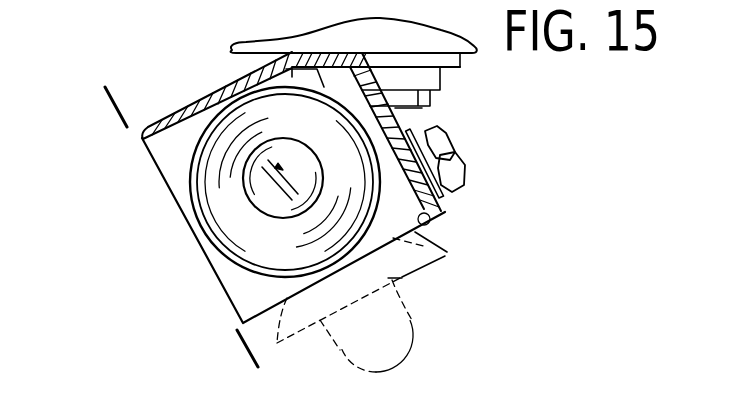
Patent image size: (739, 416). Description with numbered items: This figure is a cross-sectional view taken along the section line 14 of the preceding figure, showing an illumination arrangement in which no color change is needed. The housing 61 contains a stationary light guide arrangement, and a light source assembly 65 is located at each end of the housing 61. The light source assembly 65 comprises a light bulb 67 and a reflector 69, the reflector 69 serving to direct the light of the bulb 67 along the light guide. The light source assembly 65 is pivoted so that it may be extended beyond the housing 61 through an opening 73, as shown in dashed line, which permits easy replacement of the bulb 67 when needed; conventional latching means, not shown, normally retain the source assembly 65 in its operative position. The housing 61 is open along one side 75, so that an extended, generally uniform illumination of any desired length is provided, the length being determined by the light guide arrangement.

The section line 14 is at (110, 103).
The housing 61 is at (192, 113).
The light source assembly 65 is at (385, 197).
The light bulb 67 is at (292, 158).
The reflector 69 is at (213, 186).
The opening 73 is at (441, 254).
The open side 75 is at (228, 297).